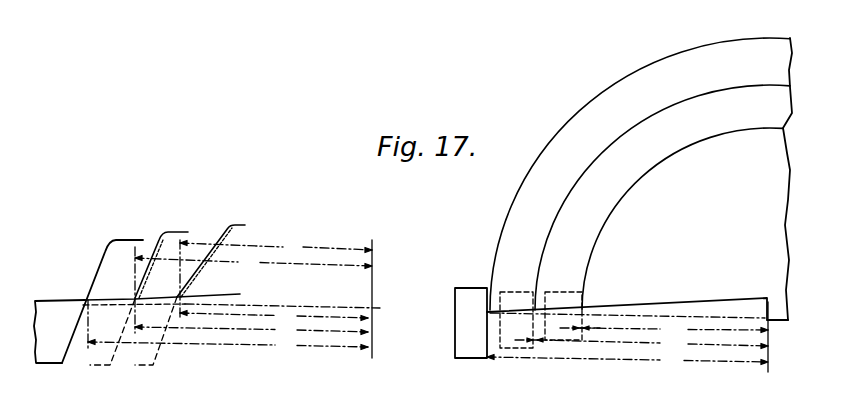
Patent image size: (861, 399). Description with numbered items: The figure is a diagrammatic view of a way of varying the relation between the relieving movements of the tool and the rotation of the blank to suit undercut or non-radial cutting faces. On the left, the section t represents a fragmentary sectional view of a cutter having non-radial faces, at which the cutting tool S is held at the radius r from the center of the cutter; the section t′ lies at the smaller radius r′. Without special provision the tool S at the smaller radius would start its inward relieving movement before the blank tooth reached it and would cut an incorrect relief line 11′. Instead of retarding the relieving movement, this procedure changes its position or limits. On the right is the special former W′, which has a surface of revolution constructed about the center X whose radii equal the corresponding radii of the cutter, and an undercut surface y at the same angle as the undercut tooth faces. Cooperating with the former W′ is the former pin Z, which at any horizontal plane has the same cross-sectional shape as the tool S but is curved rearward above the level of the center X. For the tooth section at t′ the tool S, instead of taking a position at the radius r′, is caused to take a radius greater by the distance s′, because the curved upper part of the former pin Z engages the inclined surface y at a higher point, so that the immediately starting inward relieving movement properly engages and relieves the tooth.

The cutting tool S is at (55, 353).
The tooth section at first position t is at (102, 271).
The tooth section at second position t′ is at (163, 237).
The incorrect relief line 11′ is at (162, 238).
The radius r is at (428, 352).
The radius r′ is at (451, 303).
The former pin Z is at (458, 338).
The undercut surface y is at (693, 300).
The center of the former X is at (770, 323).
The former W′ is at (577, 222).
The distance s′ is at (521, 320).